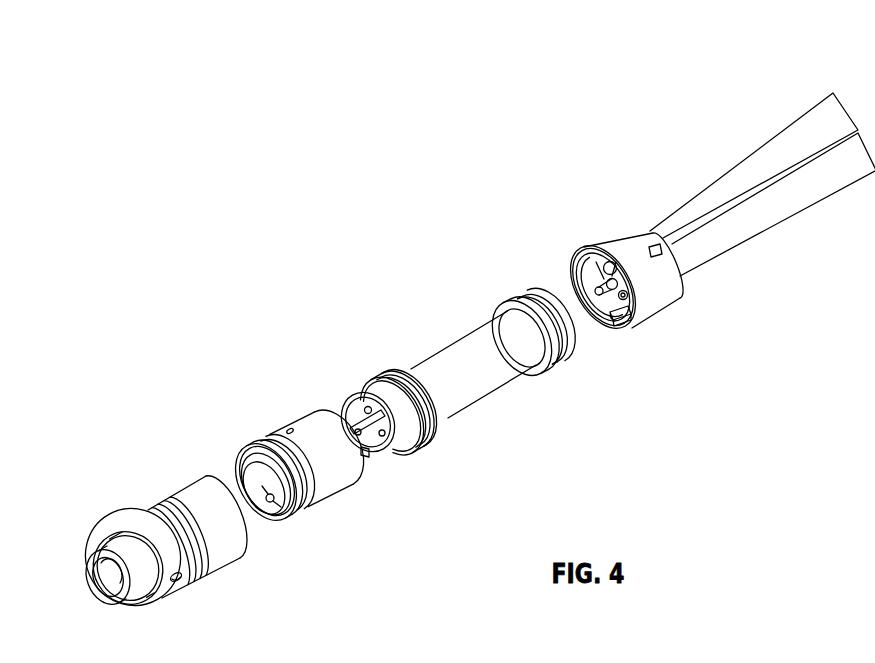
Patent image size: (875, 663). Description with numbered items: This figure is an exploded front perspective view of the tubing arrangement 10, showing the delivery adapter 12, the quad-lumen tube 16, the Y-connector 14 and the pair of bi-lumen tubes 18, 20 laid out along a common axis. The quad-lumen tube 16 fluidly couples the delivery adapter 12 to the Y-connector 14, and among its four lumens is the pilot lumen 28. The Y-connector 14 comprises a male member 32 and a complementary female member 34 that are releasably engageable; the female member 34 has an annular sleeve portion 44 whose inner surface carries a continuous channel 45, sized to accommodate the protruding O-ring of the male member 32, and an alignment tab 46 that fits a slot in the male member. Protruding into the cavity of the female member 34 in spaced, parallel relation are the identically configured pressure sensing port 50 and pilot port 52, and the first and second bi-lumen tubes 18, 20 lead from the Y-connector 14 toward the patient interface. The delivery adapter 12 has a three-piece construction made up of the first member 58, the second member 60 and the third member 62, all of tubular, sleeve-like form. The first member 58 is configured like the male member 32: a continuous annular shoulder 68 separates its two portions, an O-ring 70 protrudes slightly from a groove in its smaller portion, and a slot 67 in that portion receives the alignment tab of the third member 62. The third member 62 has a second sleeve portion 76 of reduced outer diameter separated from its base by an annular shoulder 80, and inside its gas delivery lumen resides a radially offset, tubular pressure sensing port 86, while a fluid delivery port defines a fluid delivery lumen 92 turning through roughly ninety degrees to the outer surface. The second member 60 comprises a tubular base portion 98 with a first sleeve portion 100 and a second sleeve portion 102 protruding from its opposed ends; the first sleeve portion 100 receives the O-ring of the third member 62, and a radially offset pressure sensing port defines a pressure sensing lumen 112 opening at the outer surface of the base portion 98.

The tubing arrangement 10 is at (505, 210).
The delivery adapter 12 is at (170, 662).
The Y-connector 14 is at (745, 314).
The quad-lumen tube 16 is at (440, 342).
The first bi-lumen tube 18 is at (745, 247).
The second bi-lumen tube 20 is at (790, 115).
The pilot lumen 28 is at (358, 413).
The male member 32 is at (510, 288).
The female member 34 is at (610, 218).
The sleeve portion 44 is at (647, 306).
The channel 45 is at (597, 331).
The alignment tab 46 is at (617, 320).
The pressure sensing port 50 is at (627, 296).
The pilot port 52 is at (597, 290).
The first member 58 is at (415, 452).
The second member 60 is at (88, 521).
The third member 62 is at (333, 500).
The slot 67 is at (367, 458).
The shoulder 68 is at (373, 376).
The O-ring 70 is at (412, 418).
The second sleeve portion 76 is at (242, 469).
The shoulder 80 is at (293, 517).
The pressure sensing port 86 is at (272, 502).
The fluid delivery lumen 92 is at (288, 430).
The base portion 98 is at (134, 516).
The first sleeve portion 100 is at (198, 487).
The second sleeve portion 102 is at (98, 592).
The pressure sensing lumen 112 is at (177, 583).